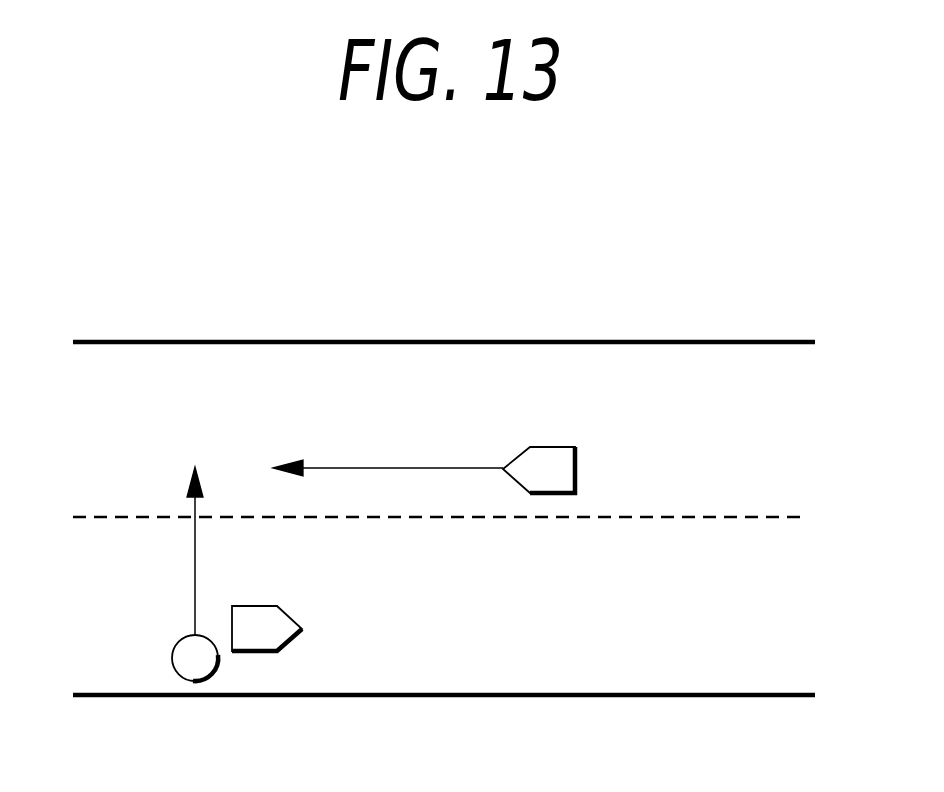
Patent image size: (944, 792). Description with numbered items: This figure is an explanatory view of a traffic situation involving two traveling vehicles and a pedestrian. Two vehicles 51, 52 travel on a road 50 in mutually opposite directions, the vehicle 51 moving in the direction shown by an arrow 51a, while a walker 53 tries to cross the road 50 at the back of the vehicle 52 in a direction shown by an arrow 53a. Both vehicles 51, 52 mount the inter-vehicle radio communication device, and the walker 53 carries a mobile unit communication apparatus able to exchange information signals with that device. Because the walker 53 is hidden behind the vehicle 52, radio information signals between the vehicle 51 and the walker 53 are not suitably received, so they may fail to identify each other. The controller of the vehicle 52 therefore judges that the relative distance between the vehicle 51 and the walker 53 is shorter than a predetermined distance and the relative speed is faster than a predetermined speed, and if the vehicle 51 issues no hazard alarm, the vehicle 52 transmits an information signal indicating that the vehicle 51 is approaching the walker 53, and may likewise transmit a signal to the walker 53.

The road 50 is at (600, 385).
The vehicle 51 is at (578, 466).
The arrow 51a is at (376, 467).
The vehicle 52 is at (262, 651).
The walker 53 is at (196, 697).
The arrow 53a is at (192, 572).